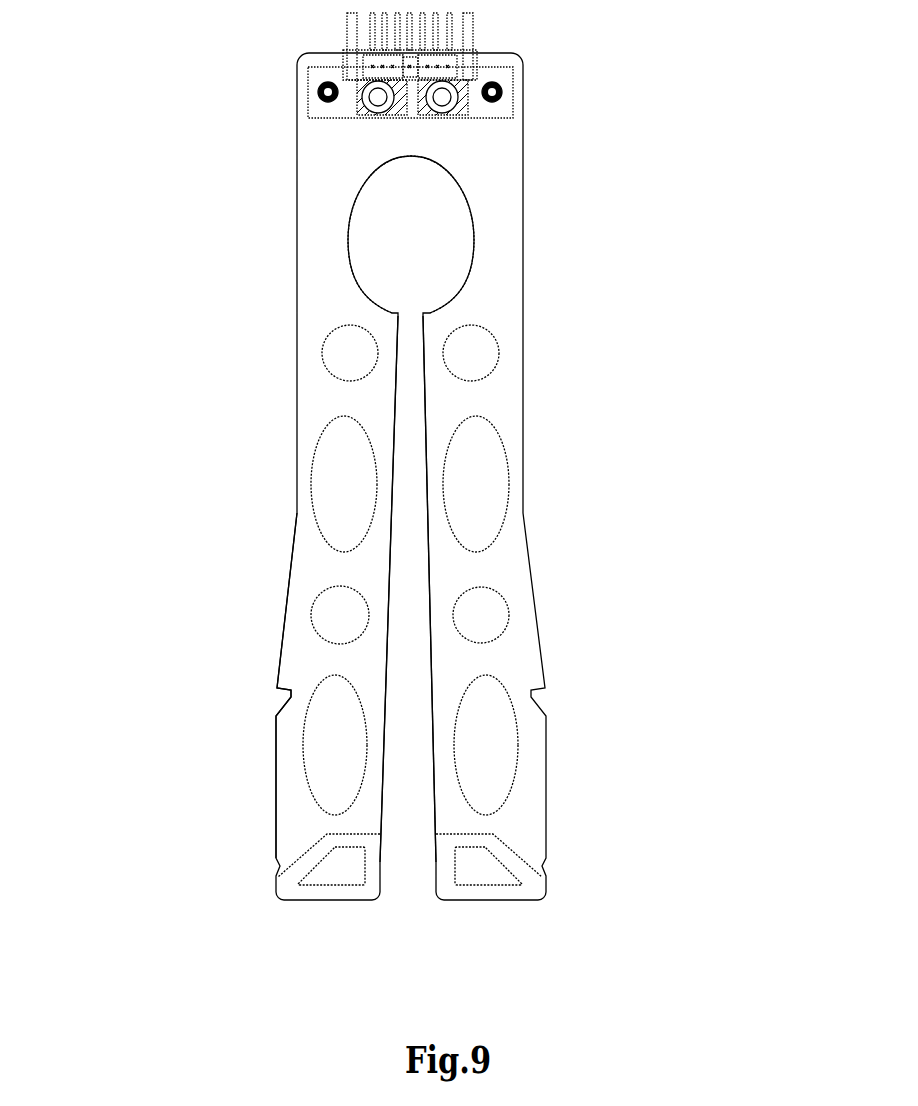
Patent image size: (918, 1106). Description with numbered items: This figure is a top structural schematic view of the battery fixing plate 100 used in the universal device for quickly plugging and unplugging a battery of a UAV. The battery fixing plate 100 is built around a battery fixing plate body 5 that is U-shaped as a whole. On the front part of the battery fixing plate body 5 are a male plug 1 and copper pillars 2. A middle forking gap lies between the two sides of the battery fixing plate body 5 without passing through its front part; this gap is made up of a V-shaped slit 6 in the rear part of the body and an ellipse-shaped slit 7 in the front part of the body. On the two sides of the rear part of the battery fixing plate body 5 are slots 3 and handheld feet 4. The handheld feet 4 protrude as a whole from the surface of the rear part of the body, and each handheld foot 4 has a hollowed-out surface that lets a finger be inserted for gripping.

The male plug 1 is at (575, 0).
The copper pillars 2 is at (363, 93).
The battery fixing plate 100 is at (712, 209).
The battery fixing plate body 5 is at (693, 372).
The ellipse-shaped slit 7 is at (653, 510).
The V-shaped slit 6 is at (675, 702).
The slots 3 is at (275, 703).
The handheld feet 4 is at (340, 895).